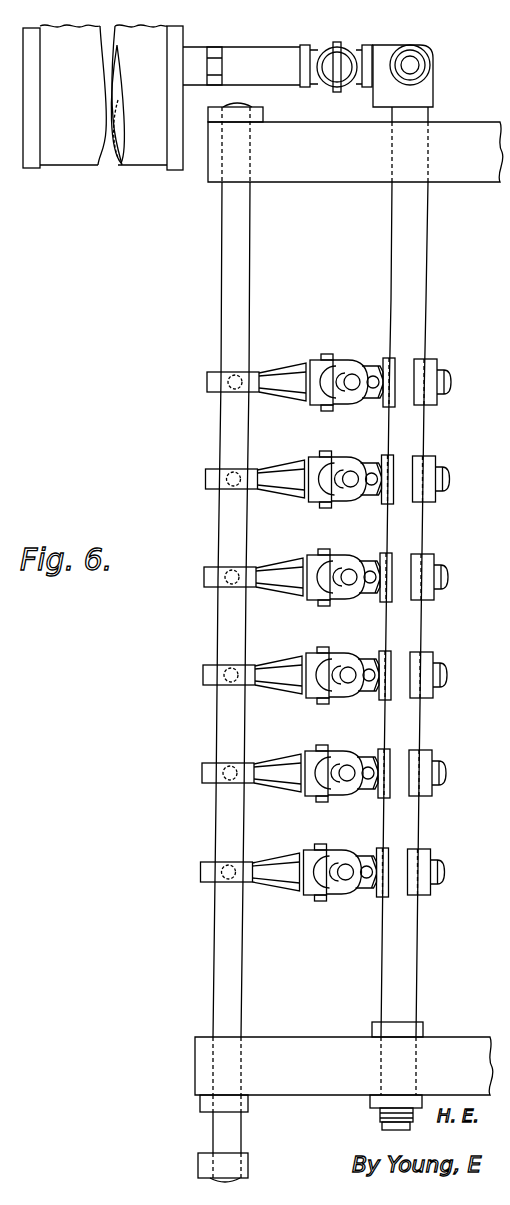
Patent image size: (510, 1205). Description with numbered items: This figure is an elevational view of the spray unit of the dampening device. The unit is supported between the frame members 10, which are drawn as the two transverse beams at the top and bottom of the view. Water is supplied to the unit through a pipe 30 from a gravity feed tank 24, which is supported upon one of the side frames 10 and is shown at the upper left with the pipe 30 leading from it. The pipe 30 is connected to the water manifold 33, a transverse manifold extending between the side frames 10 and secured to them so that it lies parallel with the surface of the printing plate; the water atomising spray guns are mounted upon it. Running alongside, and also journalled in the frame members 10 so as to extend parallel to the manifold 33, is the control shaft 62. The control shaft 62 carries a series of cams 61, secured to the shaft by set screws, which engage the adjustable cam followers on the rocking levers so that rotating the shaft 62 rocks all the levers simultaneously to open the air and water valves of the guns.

The frame members 10 is at (357, 160).
The gravity feed tank 24 is at (85, 148).
The pipe 30 is at (237, 62).
The water manifold 33 is at (408, 317).
The cams 61 is at (206, 392).
The control shaft 62 is at (230, 820).